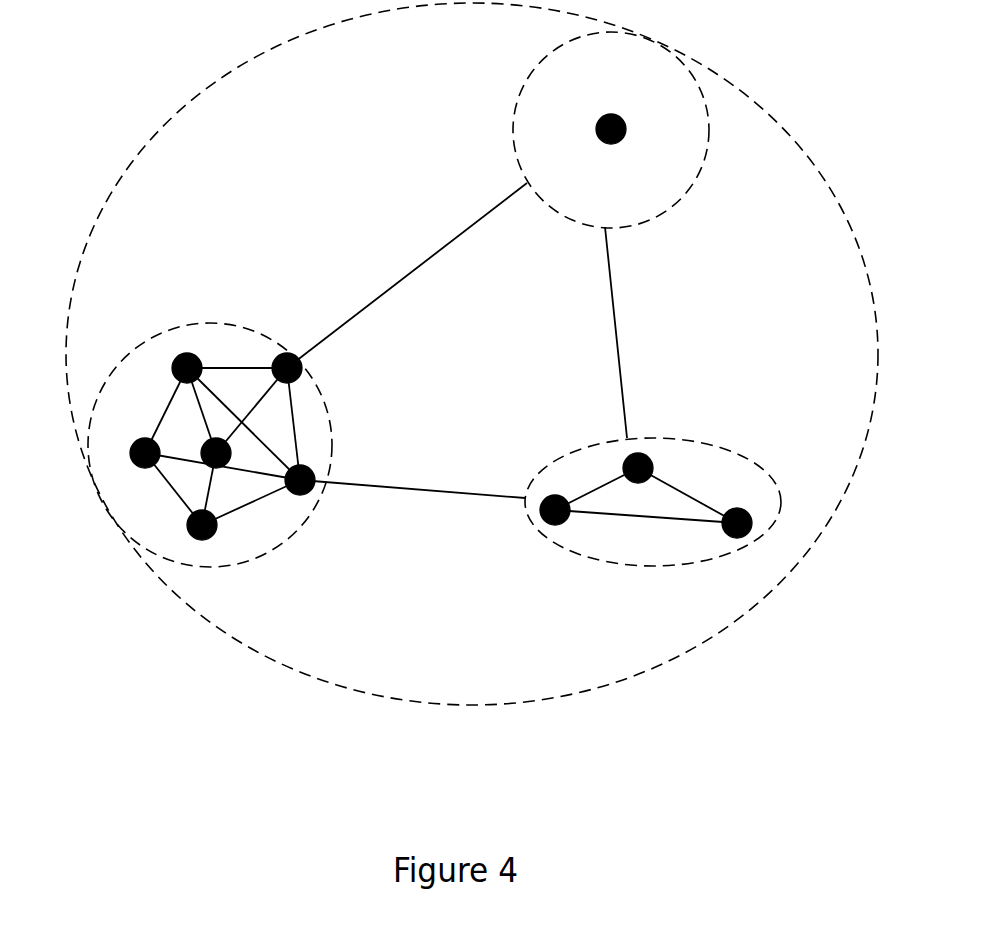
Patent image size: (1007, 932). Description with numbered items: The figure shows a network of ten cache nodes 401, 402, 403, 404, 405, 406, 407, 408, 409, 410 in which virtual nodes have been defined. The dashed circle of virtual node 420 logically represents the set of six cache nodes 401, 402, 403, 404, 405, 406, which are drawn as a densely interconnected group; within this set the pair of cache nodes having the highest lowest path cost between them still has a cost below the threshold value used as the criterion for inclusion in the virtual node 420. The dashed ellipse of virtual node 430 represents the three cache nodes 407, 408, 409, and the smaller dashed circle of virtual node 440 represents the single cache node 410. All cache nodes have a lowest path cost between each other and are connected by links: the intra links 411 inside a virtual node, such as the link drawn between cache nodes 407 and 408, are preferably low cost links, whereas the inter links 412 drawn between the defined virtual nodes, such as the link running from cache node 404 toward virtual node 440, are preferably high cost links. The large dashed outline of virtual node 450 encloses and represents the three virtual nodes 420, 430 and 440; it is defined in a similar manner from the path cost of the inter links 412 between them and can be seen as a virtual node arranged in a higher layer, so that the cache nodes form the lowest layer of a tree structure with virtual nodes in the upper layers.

The cache node 401 is at (131, 470).
The cache node 402 is at (202, 540).
The cache node 403 is at (318, 494).
The cache node 404 is at (301, 363).
The cache node 405 is at (187, 353).
The cache node 406 is at (203, 447).
The cache node 407 is at (538, 520).
The cache node 408 is at (732, 538).
The cache node 409 is at (648, 453).
The cache node 410 is at (597, 126).
The intra link 411 is at (630, 516).
The inter link 412 is at (403, 273).
The virtual node 420 is at (278, 547).
The virtual node 430 is at (752, 458).
The virtual node 440 is at (693, 185).
The virtual node 450 is at (215, 77).